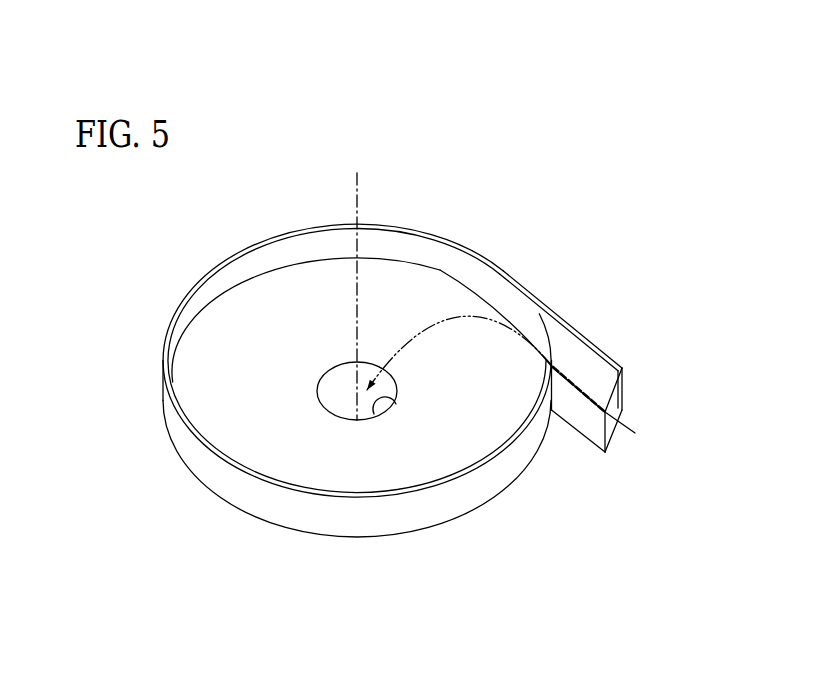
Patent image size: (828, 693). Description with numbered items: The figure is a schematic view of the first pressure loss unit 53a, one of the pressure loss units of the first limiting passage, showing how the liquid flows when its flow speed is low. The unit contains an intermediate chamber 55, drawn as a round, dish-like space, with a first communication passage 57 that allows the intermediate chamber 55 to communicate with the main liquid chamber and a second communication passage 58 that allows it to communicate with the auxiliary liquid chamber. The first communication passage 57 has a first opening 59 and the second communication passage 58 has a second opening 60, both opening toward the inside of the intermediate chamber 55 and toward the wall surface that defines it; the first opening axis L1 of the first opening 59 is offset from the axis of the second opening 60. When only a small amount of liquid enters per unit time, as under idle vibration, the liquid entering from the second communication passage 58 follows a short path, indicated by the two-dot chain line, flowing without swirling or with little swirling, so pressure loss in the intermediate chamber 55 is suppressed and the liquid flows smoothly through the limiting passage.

The first pressure loss unit 53a is at (548, 223).
The intermediate chamber 55 is at (250, 287).
The first communication passage 57 is at (338, 412).
The second communication passage 58 is at (602, 374).
The first opening 59 is at (396, 403).
The second opening 60 is at (547, 367).
The first opening axis L1 is at (357, 192).